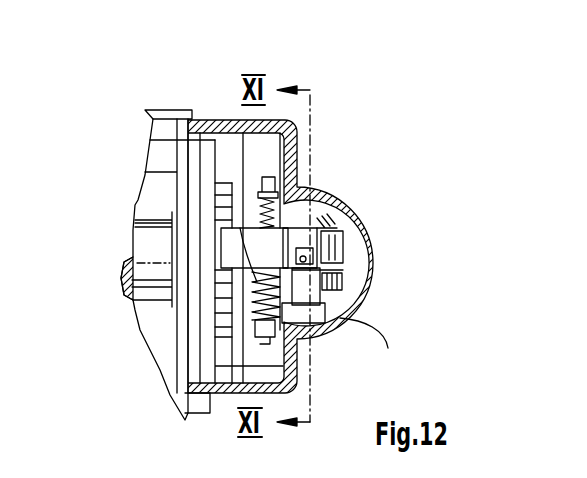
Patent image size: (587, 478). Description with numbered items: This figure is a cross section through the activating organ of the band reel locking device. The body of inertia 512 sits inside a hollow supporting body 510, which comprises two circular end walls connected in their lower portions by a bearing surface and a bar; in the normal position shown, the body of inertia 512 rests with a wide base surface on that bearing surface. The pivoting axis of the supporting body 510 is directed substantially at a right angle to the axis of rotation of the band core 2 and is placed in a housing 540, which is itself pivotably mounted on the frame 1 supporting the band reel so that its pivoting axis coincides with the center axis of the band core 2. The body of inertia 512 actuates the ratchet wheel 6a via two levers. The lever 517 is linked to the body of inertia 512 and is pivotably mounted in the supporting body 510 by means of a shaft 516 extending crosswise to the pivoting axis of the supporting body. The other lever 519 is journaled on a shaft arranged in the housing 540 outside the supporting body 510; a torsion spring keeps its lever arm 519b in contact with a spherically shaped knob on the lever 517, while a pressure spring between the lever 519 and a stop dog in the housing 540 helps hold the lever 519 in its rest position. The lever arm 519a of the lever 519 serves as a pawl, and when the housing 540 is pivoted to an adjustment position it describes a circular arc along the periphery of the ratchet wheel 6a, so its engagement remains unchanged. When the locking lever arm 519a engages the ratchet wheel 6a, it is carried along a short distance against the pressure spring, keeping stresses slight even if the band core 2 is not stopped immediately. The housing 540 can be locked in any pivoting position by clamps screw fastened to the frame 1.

The frame 1 is at (161, 113).
The band core 2 is at (158, 243).
The ratchet wheel 6a is at (223, 188).
The supporting body of the body of inertia 510 is at (322, 207).
The body of inertia 512 is at (333, 246).
The shaft 516 is at (337, 316).
The lever 517 is at (322, 275).
The lever 519 is at (298, 240).
The lever arm 519a is at (233, 242).
The lever arm 519b is at (337, 224).
The housing 540 is at (290, 362).